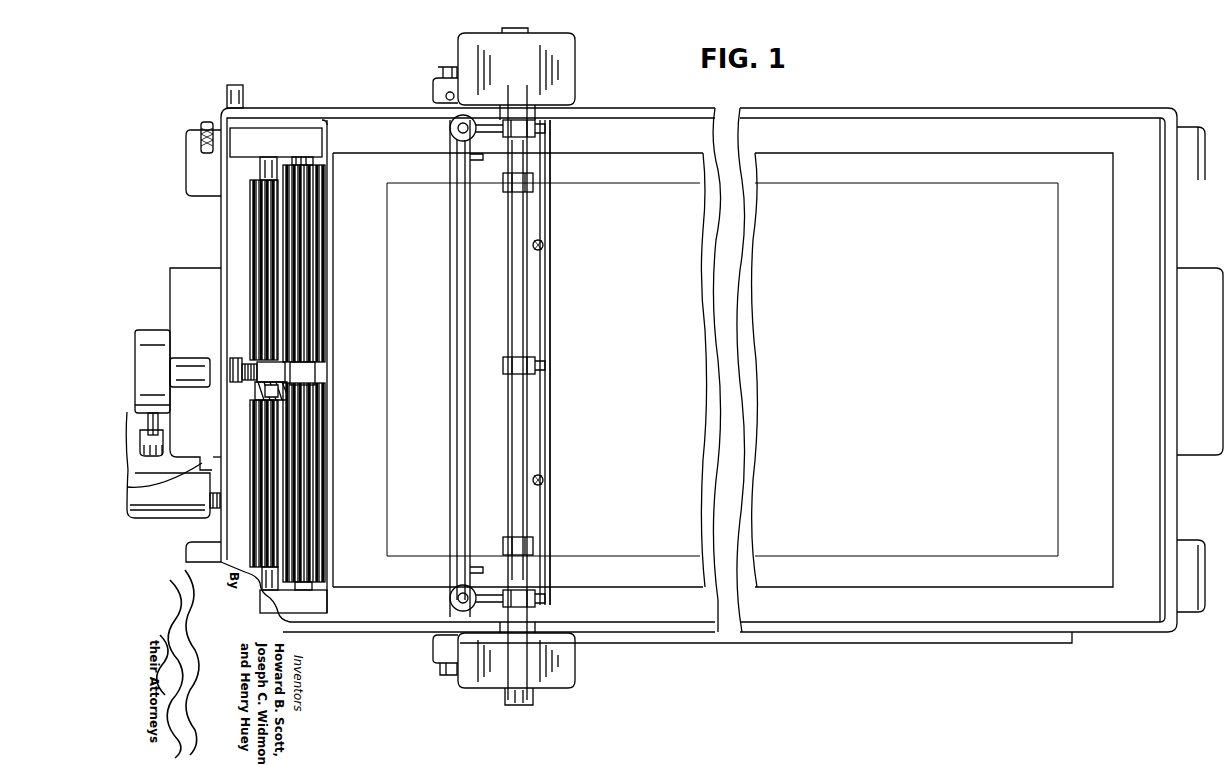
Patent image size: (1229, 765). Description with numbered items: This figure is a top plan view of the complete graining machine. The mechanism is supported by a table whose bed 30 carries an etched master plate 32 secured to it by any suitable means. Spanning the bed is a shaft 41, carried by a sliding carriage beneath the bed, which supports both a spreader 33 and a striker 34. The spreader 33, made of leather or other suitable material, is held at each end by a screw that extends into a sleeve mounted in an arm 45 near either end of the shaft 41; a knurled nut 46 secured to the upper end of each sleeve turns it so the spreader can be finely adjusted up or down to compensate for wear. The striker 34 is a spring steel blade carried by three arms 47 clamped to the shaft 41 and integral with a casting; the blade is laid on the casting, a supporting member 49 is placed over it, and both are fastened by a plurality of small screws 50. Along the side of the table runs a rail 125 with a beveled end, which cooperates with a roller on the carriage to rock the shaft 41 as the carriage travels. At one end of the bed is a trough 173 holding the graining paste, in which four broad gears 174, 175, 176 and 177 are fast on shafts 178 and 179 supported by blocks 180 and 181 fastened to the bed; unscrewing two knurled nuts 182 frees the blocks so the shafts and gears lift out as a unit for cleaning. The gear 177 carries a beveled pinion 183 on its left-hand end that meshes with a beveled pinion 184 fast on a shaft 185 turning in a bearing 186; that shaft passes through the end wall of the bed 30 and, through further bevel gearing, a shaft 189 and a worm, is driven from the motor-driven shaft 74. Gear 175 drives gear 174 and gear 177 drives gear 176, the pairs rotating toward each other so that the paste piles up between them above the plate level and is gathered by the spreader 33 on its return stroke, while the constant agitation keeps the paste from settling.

The bed 30 is at (828, 597).
The etched master plate 32 is at (1043, 499).
The spreader 33 is at (456, 389).
The striker 34 is at (548, 399).
The shaft 41 is at (512, 401).
The arm 45 is at (493, 133).
The knurled nut 46 is at (450, 129).
The arm 47 is at (505, 186).
The supporting member 49 is at (543, 447).
The small screw 50 is at (545, 246).
The shaft 74 is at (213, 513).
The rail 125 is at (680, 645).
The trough 173 is at (228, 228).
The broad gear 174 is at (312, 271).
The broad gear 175 is at (258, 243).
The broad gear 176 is at (312, 456).
The broad gear 177 is at (256, 441).
The shaft 178 is at (262, 164).
The shaft 179 is at (318, 160).
The block 180 is at (272, 140).
The block 181 is at (315, 608).
The knurled nut 182 is at (206, 120).
The beveled pinion 183 is at (288, 380).
The beveled pinion 184 is at (250, 384).
The shaft 185 is at (232, 360).
The bearing 186 is at (185, 372).
The shaft 189 is at (158, 428).